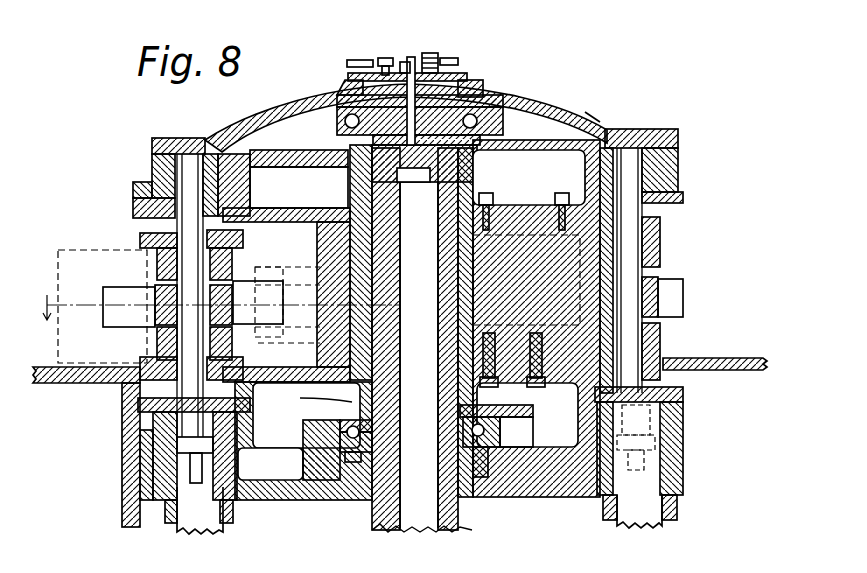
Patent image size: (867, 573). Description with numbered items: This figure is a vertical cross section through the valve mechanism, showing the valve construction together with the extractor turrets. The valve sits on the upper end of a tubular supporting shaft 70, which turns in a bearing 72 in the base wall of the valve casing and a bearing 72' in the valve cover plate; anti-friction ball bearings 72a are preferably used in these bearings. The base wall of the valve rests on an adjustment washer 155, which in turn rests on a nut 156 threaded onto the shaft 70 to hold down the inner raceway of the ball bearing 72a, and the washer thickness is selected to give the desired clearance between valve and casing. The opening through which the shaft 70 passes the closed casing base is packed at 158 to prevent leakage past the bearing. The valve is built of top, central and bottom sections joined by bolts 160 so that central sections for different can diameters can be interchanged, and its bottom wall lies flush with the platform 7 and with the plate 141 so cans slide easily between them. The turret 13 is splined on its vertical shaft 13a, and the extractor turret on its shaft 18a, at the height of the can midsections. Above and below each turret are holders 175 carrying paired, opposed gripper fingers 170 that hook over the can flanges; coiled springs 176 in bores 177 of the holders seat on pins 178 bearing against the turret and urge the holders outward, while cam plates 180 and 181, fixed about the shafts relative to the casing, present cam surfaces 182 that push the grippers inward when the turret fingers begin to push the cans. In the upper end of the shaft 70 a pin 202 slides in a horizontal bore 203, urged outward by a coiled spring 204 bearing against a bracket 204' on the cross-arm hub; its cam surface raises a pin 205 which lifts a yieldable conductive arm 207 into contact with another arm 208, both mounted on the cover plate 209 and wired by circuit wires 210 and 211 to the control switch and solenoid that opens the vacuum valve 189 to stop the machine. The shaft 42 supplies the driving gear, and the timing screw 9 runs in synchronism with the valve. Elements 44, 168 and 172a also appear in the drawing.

The platform 7 is at (75, 383).
The timing screw 9 is at (224, 307).
The turret 13 is at (660, 276).
The vertical shaft 13a is at (650, 345).
The drive shaft 18a is at (185, 172).
The shaft 42 is at (205, 525).
The side wall 44 is at (137, 455).
The tubular supporting shaft 70 is at (392, 526).
The bearing 72 is at (424, 351).
The bearing 72' is at (579, 105).
The anti-friction ball bearing 72a is at (357, 470).
The plate 141 is at (745, 358).
The adjustment washer 155 is at (307, 395).
The nut 156 is at (340, 425).
The packing 158 is at (480, 478).
The bolts 160 is at (518, 205).
The bearing ring 168 is at (108, 288).
The gripper fingers 170 is at (150, 240).
The rotor portion 172a is at (287, 305).
The holders 175 is at (160, 262).
The coiled springs 176 is at (235, 347).
The bores 177 is at (160, 350).
The pins 178 is at (158, 284).
The cam plate 180 is at (133, 206).
The cam plate 181 is at (140, 404).
The cam surfaces 182 is at (655, 218).
The normally closed valve 189 is at (598, 130).
The pin 202 is at (476, 151).
The horizontal bore 203 is at (352, 90).
The coiled spring 204 is at (286, 266).
The bracket 204' is at (306, 180).
The pin 205 is at (520, 101).
The yieldable electrically conductive arm 207 is at (418, 64).
The arm 208 is at (398, 66).
The cover plate 209 is at (465, 92).
The circuit wire 210 is at (452, 62).
The circuit wire 211 is at (356, 64).